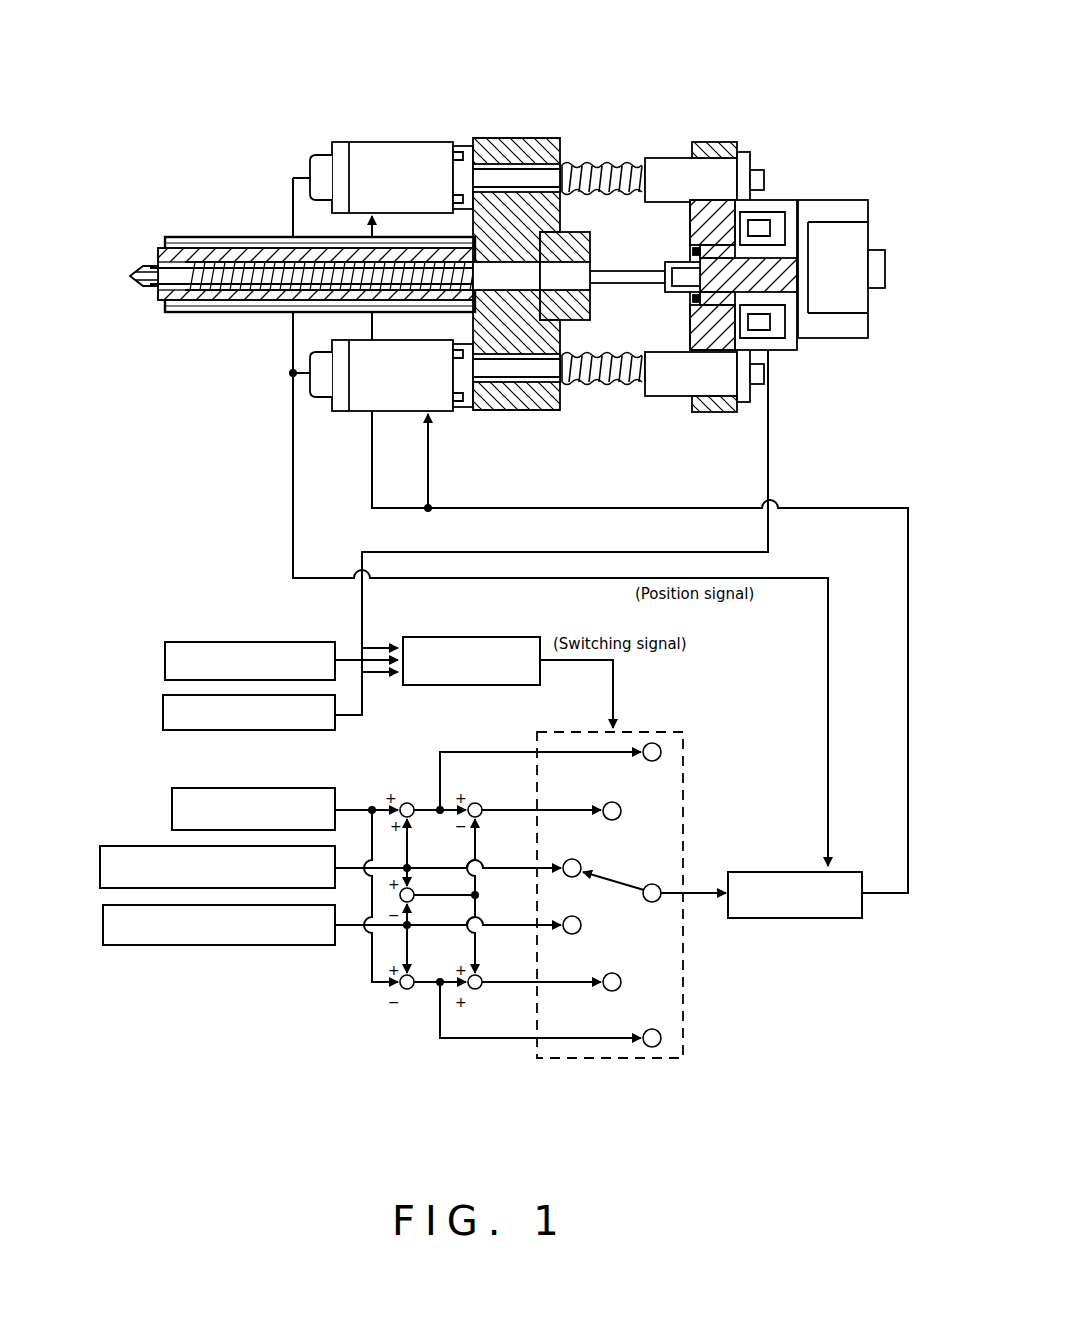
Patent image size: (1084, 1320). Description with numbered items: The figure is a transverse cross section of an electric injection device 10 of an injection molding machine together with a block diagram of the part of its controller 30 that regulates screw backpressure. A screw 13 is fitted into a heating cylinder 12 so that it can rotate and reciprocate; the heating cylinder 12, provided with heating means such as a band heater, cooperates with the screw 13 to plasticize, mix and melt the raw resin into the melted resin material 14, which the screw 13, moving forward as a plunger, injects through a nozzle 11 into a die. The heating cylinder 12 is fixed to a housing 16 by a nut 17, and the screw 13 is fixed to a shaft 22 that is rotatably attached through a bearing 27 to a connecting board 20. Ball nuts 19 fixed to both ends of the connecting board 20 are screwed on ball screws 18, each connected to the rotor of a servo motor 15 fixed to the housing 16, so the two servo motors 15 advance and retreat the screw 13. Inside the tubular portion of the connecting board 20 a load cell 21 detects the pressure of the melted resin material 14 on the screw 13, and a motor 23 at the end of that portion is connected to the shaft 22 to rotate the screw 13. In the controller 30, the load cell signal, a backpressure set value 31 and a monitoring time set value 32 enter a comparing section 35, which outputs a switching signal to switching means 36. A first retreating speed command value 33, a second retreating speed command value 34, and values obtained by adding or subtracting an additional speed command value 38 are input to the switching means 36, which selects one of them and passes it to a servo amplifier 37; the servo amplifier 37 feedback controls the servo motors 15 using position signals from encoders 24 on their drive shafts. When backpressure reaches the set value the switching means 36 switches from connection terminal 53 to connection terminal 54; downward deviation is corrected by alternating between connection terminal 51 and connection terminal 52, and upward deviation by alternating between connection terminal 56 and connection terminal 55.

The injection device 10 is at (572, 103).
The nozzle 11 is at (140, 262).
The heating cylinder 12 is at (238, 236).
The screw 13 is at (292, 262).
The melted resin material 14 is at (196, 300).
The servo motor 15 is at (400, 140).
The housing 16 is at (495, 138).
The nut 17 is at (573, 234).
The ball screw 18 is at (593, 164).
The ball nut 19 is at (658, 156).
The connecting board 20 is at (720, 140).
The load cell 21 is at (775, 200).
The shaft 22 is at (805, 272).
The motor 23 is at (855, 345).
The encoder 24 is at (318, 152).
The bearing 27 is at (692, 306).
The controller 30 is at (580, 1066).
The backpressure set value 31 is at (190, 640).
The monitoring time set value 32 is at (270, 732).
The first retreating speed command value 33 is at (195, 945).
The second retreating speed command value 34 is at (165, 846).
The comparing section 35 is at (472, 636).
The switching means 36 is at (652, 730).
The servo amplifier 37 is at (800, 917).
The additional speed command value 38 is at (318, 788).
The connection terminal 51 is at (660, 1042).
The connection terminal 52 is at (622, 982).
The connection terminal 53 is at (582, 925).
The connection terminal 54 is at (582, 866).
The connection terminal 55 is at (622, 812).
The connection terminal 56 is at (662, 752).